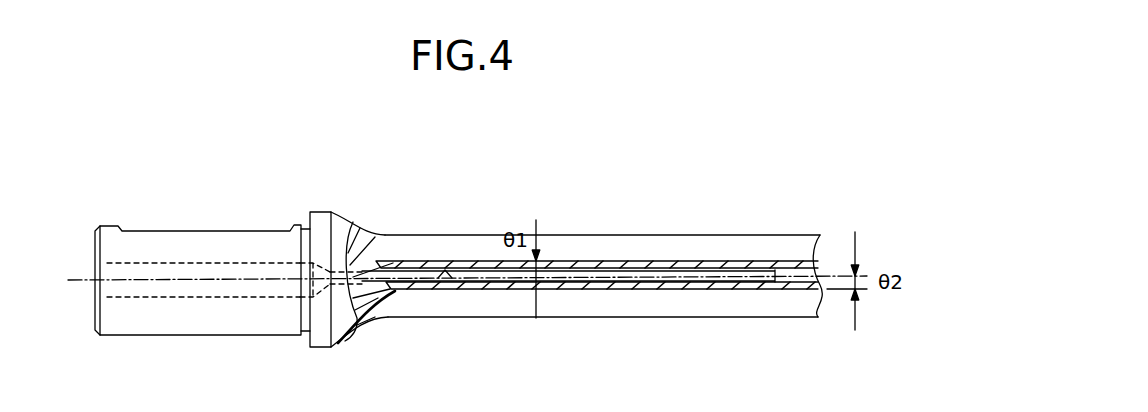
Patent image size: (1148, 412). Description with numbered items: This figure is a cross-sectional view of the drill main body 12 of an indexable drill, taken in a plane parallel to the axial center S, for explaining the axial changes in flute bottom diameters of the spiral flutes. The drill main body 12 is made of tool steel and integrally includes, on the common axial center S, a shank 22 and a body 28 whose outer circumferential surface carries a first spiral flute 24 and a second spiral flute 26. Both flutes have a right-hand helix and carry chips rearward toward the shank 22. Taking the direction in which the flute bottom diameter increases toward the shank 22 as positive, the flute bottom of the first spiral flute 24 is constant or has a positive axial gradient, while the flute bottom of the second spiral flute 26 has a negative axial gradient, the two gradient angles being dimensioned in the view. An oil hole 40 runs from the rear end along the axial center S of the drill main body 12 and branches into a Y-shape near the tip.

The drill main body 12 is at (722, 155).
The shank 22 is at (198, 320).
The body 28 is at (442, 215).
The first spiral flute 24 is at (595, 233).
The second spiral flute 26 is at (632, 320).
The oil hole 40 is at (446, 280).